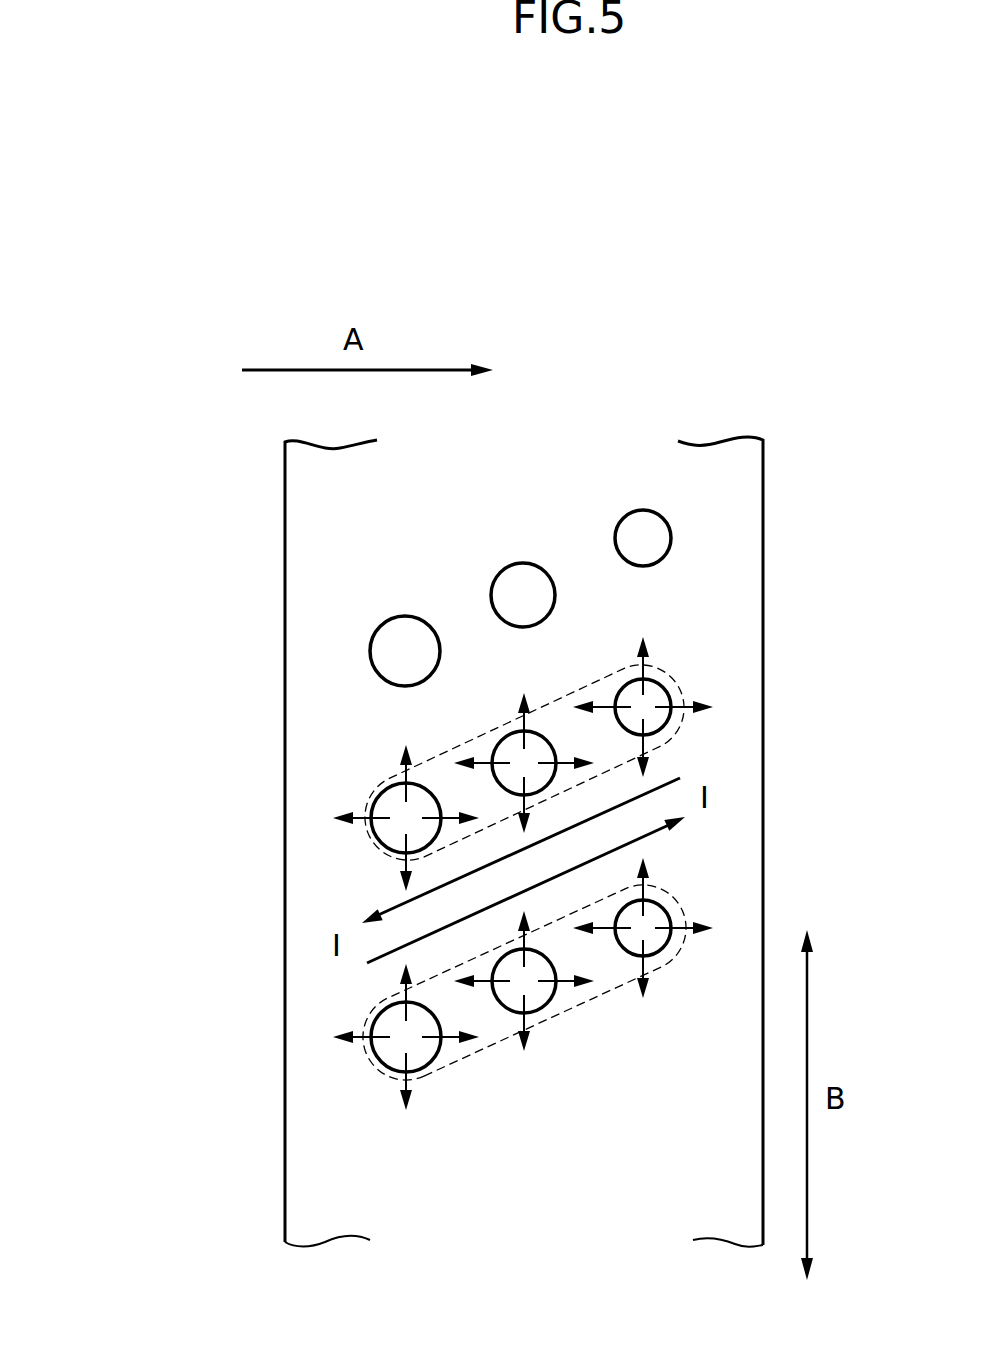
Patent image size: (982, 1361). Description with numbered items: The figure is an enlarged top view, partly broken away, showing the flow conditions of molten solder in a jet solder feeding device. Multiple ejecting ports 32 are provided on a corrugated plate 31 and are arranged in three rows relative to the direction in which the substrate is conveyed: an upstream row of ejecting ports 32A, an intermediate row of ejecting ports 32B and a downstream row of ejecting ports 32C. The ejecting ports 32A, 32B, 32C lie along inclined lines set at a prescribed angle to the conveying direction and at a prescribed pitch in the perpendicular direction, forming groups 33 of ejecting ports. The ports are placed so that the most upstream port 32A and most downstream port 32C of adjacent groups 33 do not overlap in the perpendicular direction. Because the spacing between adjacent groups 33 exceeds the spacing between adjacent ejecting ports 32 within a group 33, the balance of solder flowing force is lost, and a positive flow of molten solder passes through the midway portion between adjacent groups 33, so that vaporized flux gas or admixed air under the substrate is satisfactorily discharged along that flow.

The corrugated plate 31 is at (733, 482).
The ejecting ports 32 is at (384, 529).
The upstream row of ejecting ports 32A is at (395, 642).
The intermediate row of ejecting ports 32B is at (521, 588).
The downstream row of ejecting ports 32C is at (635, 532).
The groups of ejecting ports 33 is at (693, 680).